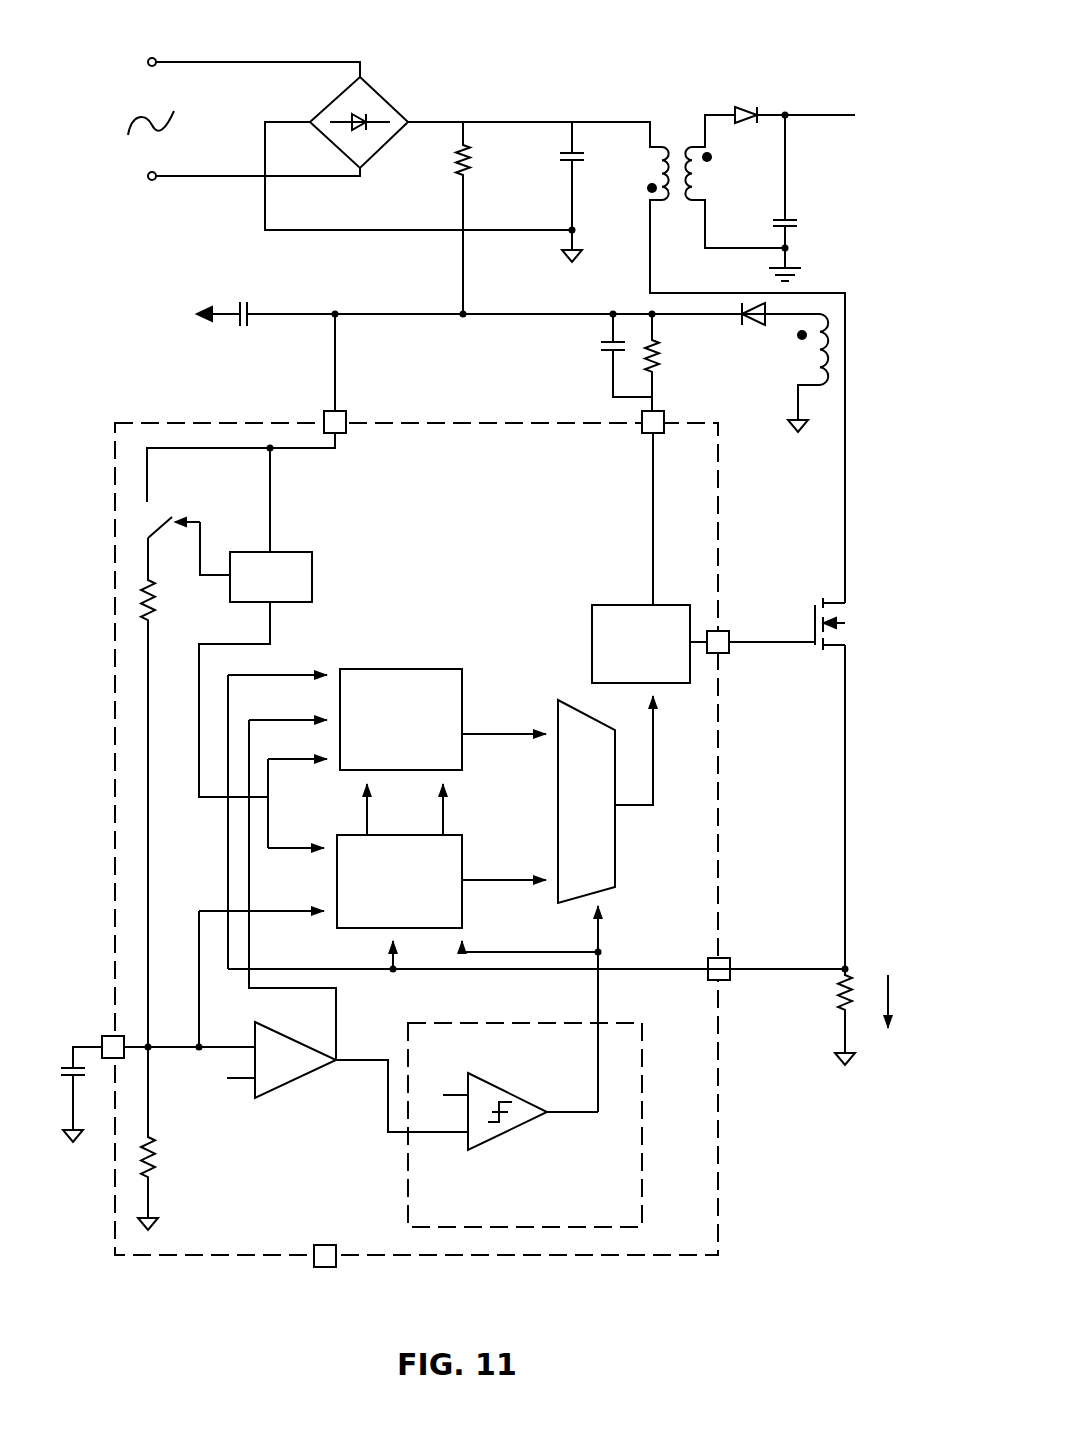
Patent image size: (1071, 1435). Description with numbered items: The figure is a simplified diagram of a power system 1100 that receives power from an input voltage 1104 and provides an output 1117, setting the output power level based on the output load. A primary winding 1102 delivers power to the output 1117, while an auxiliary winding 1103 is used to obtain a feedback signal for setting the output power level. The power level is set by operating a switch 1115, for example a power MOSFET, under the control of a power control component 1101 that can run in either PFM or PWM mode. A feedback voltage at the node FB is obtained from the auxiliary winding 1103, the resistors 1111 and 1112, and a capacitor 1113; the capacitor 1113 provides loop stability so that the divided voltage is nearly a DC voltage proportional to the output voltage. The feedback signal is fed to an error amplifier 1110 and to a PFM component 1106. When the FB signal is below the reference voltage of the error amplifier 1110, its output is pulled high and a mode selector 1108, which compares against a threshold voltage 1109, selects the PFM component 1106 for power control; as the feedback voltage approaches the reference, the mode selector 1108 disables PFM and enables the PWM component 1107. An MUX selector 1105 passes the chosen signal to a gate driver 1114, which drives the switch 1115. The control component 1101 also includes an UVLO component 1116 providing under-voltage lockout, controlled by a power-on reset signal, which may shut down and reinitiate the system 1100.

The power system 1100 is at (728, 49).
The power control component 1101 is at (718, 1078).
The primary winding 1102 is at (675, 141).
The auxiliary winding 1103 is at (814, 356).
The input voltage 1104 is at (384, 96).
The MUX selector 1105 is at (617, 878).
The PFM component 1106 is at (462, 836).
The PWM component 1107 is at (462, 670).
The mode selector 1108 is at (645, 1130).
The threshold voltage 1109 is at (442, 1082).
The error amplifier 1110 is at (304, 1085).
The resistor 1111 is at (172, 604).
The resistor 1112 is at (164, 1166).
The capacitor 1113 is at (60, 1058).
The gate driver 1114 is at (586, 605).
The switch 1115 is at (870, 626).
The UVLO component 1116 is at (312, 582).
The output 1117 is at (838, 118).